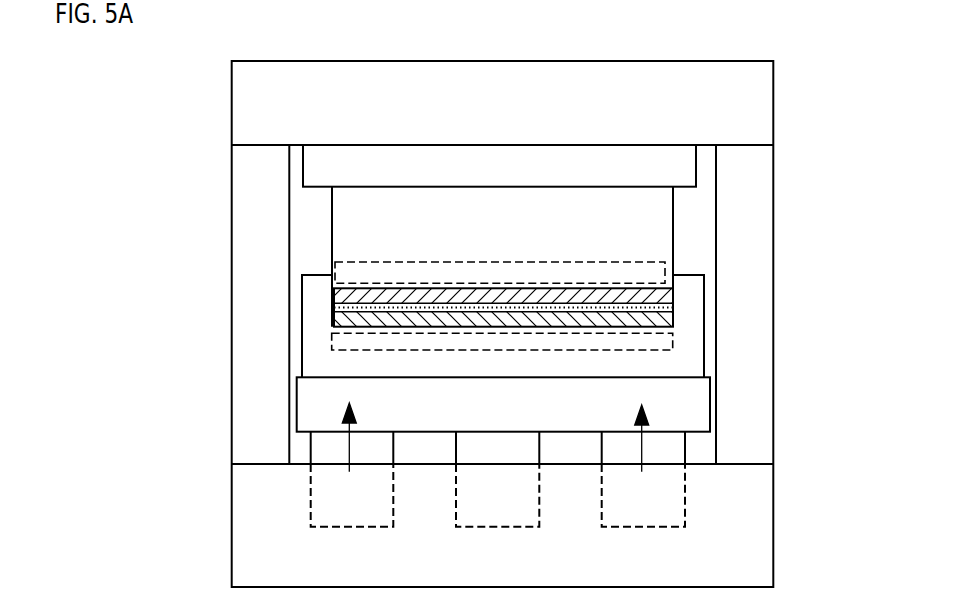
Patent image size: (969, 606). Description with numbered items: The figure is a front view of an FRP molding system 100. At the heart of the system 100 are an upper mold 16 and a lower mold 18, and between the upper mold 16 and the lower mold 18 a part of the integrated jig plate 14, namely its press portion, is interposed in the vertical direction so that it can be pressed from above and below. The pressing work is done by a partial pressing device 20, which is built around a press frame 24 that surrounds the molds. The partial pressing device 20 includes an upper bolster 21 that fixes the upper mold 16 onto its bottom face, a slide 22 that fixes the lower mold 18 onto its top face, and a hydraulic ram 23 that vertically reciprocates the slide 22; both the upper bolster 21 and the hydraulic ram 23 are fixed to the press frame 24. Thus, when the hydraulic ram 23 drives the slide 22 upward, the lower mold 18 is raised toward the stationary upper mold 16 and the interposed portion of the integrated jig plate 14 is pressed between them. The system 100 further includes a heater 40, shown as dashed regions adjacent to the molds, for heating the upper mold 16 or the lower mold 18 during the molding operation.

The FRP molding system 100 is at (144, 180).
The partial pressing device 20 is at (208, 155).
The press frame 24 is at (758, 129).
The upper bolster 21 is at (510, 182).
The upper mold 16 is at (510, 246).
The integrated jig plate 14 is at (316, 304).
The lower mold 18 is at (327, 362).
The heater 40 is at (653, 273).
The slide 22 is at (507, 422).
The hydraulic ram 23 is at (482, 455).